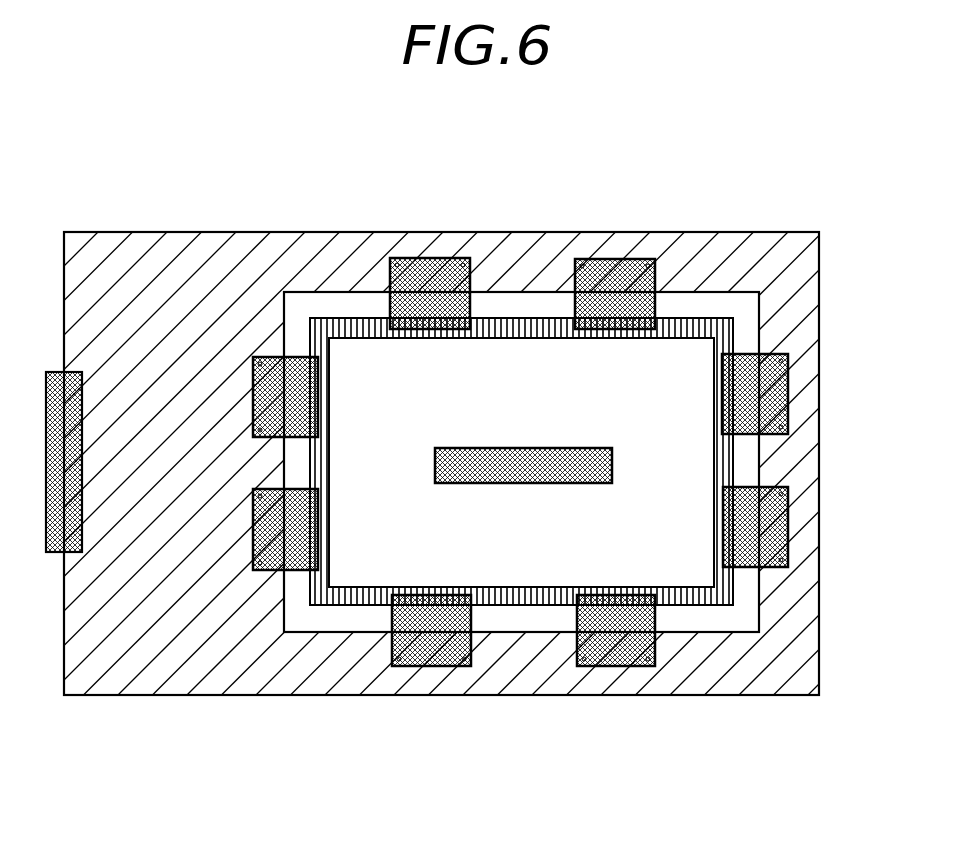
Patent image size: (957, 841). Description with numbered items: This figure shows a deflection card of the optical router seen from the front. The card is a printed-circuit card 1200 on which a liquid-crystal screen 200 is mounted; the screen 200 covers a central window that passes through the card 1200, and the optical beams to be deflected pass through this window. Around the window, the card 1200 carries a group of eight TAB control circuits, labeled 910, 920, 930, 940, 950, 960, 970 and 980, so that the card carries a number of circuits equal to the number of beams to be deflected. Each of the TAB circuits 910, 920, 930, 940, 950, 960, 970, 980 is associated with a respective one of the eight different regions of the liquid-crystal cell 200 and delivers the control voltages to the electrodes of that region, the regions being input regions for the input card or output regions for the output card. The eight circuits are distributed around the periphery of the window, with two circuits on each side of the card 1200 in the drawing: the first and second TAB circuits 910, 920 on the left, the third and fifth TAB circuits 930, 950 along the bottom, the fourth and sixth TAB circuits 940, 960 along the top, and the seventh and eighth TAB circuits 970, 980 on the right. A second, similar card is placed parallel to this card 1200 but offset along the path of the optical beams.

The printed-circuit card 1200 is at (785, 257).
The TAB circuit 910 is at (270, 570).
The TAB circuit 920 is at (268, 355).
The TAB circuit 930 is at (420, 666).
The TAB circuit 940 is at (418, 258).
The TAB circuit 950 is at (610, 666).
The TAB circuit 960 is at (612, 259).
The TAB circuit 970 is at (783, 532).
The TAB circuit 980 is at (780, 394).
The liquid-crystal screen 200 is at (523, 483).